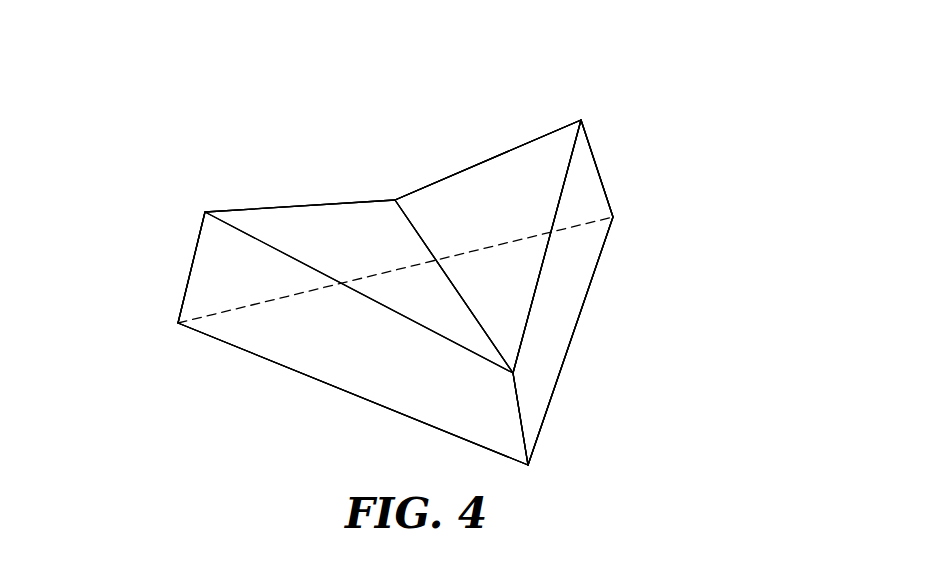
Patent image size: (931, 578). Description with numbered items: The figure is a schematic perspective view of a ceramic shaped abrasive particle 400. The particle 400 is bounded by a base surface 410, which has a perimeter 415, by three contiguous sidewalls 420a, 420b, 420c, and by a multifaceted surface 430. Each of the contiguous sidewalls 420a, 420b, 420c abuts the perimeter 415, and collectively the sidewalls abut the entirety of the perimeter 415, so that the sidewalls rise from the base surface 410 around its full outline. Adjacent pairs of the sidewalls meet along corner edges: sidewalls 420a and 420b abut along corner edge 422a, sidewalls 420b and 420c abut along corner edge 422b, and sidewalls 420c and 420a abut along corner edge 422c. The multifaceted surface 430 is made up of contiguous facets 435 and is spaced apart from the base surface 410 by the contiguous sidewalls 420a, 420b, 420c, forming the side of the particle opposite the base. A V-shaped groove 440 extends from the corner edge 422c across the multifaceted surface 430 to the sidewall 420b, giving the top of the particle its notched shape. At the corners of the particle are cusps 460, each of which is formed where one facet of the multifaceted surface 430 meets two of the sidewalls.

The ceramic shaped abrasive particle 400 is at (238, 122).
The base surface 410 is at (570, 345).
The perimeter 415 is at (323, 387).
The contiguous sidewall 420a is at (573, 255).
The contiguous sidewall 420b is at (540, 138).
The contiguous sidewall 420c is at (417, 382).
The corner edge 422a is at (602, 173).
The corner edge 422b is at (189, 270).
The corner edge 422c is at (520, 420).
The multifaceted surface 430 is at (333, 227).
The contiguous facets 435 is at (492, 183).
The V-shaped groove 440 is at (413, 223).
The cusps 460 is at (205, 212).